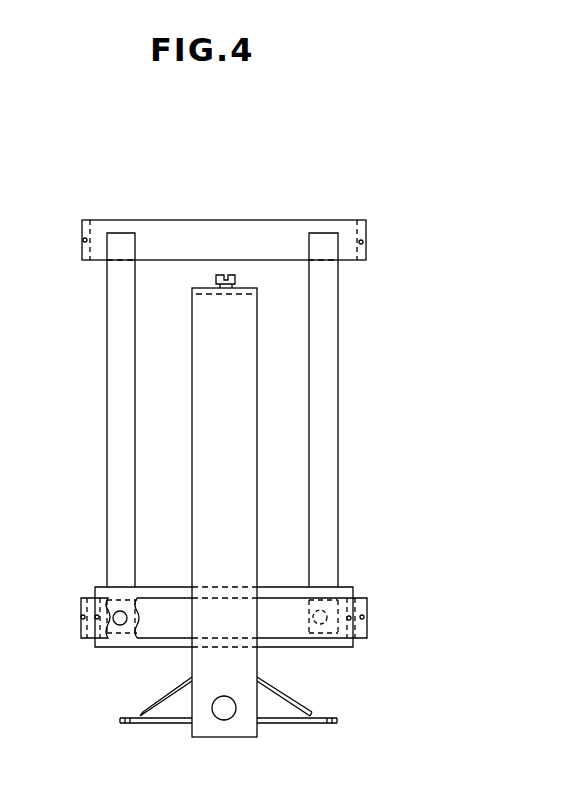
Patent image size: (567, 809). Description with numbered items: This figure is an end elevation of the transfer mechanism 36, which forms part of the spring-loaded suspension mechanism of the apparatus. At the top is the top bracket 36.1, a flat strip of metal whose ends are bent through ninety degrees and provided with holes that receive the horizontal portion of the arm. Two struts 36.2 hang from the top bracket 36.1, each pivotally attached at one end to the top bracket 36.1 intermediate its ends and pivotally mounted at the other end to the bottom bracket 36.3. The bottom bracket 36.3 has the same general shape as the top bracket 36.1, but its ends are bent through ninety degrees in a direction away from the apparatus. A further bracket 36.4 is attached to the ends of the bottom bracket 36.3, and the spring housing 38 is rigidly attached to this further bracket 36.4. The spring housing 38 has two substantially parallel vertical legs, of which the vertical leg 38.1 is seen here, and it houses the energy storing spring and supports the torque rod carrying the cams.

The transfer mechanism 36 is at (458, 242).
The top bracket 36.1 is at (273, 228).
The struts 36.2 is at (117, 381).
The bottom bracket 36.3 is at (120, 590).
The further bracket 36.4 is at (296, 630).
The spring housing 38 is at (280, 425).
The vertical leg 38.1 is at (237, 490).